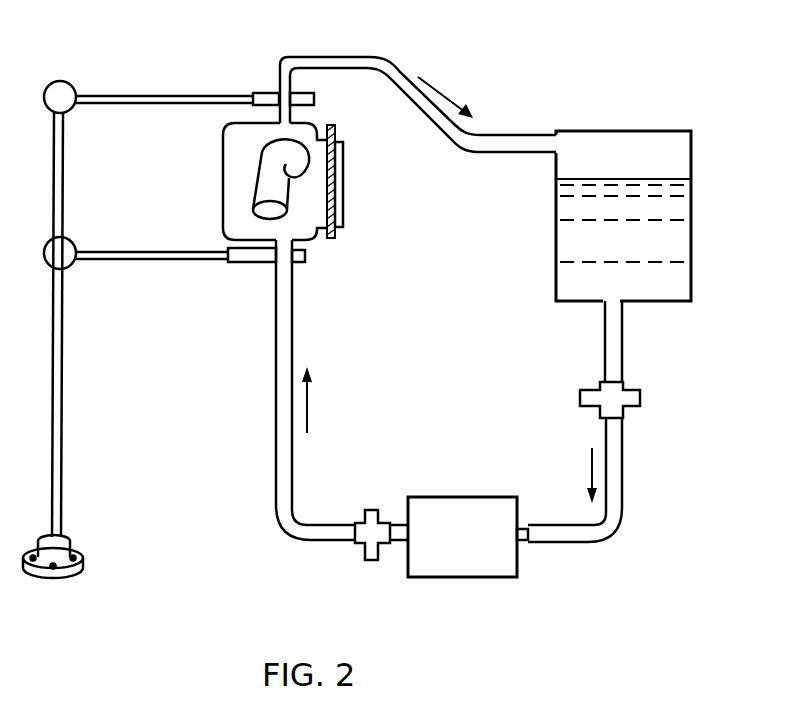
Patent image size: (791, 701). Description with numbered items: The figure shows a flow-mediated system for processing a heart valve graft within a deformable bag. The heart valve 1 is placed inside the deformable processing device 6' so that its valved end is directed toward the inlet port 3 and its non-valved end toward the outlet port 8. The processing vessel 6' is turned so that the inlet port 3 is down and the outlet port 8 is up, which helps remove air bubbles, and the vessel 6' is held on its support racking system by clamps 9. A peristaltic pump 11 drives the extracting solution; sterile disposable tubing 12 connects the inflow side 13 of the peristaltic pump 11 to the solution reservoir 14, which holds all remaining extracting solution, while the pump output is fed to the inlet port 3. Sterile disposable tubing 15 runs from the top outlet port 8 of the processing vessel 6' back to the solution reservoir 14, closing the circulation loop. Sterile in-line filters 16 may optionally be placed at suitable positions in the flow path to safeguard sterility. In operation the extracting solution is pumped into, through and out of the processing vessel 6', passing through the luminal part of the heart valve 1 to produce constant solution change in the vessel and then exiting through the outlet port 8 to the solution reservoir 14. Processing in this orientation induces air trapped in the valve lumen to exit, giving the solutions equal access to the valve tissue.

The heart valve 1 is at (264, 187).
The inlet port 3 is at (305, 243).
The deformable processing device 6' is at (219, 181).
The outlet port 8 is at (262, 95).
The clamps 9 is at (148, 105).
The peristaltic pump 11 is at (469, 584).
The sterile disposable tubing 12 is at (623, 512).
The inflow side 13 is at (530, 550).
The solution reservoir 14 is at (700, 228).
The sterile disposable tubing 15 is at (397, 70).
The sterile in-line filters 16 is at (642, 386).